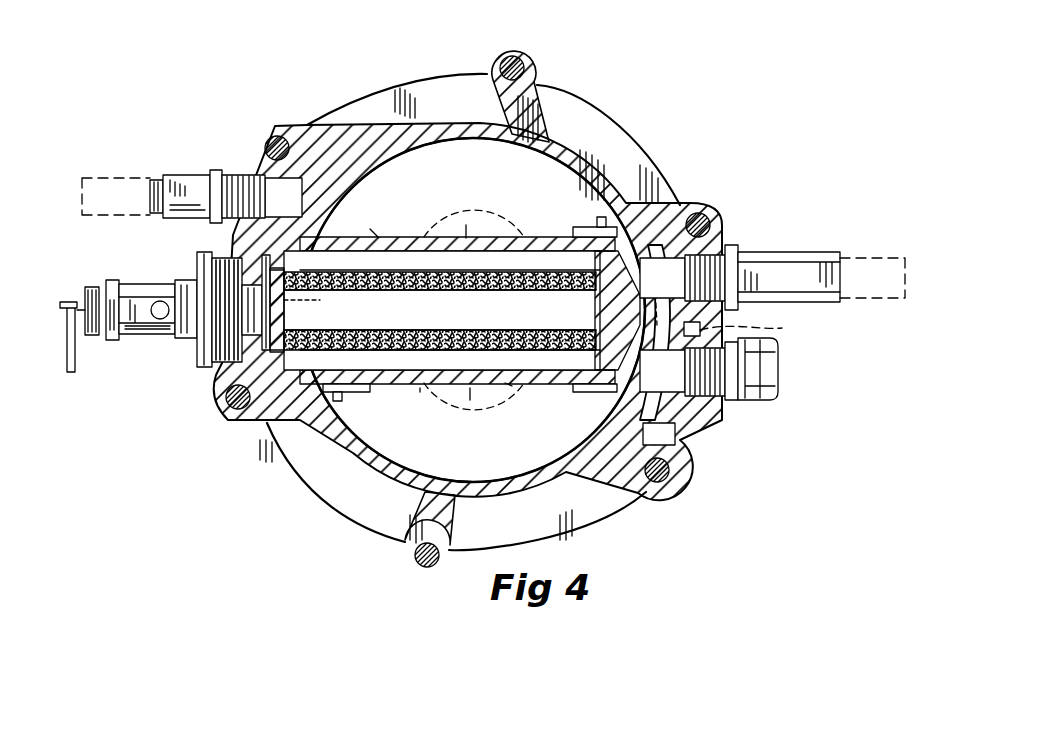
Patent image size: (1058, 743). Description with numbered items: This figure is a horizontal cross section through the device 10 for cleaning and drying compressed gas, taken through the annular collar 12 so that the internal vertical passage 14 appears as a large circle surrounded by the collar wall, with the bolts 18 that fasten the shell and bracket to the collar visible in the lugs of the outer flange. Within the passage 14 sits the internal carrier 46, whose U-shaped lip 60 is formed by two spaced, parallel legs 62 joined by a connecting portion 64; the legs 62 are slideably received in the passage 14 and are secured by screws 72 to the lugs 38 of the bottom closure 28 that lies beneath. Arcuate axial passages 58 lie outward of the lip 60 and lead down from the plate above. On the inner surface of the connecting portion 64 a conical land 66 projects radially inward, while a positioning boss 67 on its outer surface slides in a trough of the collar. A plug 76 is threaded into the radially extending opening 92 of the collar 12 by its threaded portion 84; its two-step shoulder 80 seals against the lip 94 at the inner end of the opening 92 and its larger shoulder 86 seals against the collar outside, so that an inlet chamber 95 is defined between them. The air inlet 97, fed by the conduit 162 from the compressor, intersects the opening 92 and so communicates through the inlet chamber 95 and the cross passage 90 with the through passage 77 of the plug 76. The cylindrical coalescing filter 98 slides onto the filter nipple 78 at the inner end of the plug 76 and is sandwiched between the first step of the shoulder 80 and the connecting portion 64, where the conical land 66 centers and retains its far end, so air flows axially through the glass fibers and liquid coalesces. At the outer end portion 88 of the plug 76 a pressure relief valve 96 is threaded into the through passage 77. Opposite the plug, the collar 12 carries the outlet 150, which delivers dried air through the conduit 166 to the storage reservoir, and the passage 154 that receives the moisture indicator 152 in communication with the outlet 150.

The device 10 is at (213, 107).
The annular collar 12 is at (300, 124).
The passage 14 is at (540, 458).
The bolts 18 is at (512, 56).
The bottom closure 28 is at (476, 143).
The lugs 38 is at (584, 230).
The internal carrier 46 is at (396, 236).
The axial passages 58 is at (446, 230).
The U-shaped lip 60 is at (430, 390).
The legs 62 is at (386, 238).
The connecting portion 64 is at (656, 258).
The conical land 66 is at (596, 308).
The positioning boss 67 is at (749, 329).
The screws 72 is at (600, 220).
The plug 76 is at (208, 266).
The through passage 77 is at (370, 309).
The filter nipple 78 is at (300, 296).
The two-step radially extending shoulder 80 is at (276, 358).
The threaded portion 84 is at (234, 340).
The radially extending shoulder 86 is at (205, 344).
The portion 88 is at (180, 334).
The cross passage 90 is at (196, 292).
The radially extending opening 92 is at (254, 376).
The lip 94 is at (232, 264).
The inlet chamber 95 is at (278, 378).
The pressure relief valve 96 is at (87, 285).
The air inlet 97 is at (290, 190).
The coalescing filter 98 is at (508, 280).
The outlet 150 is at (676, 392).
The moisture indicator 152 is at (779, 380).
The passage 154 is at (727, 252).
The conduit 162 is at (94, 180).
The conduit 166 is at (902, 258).